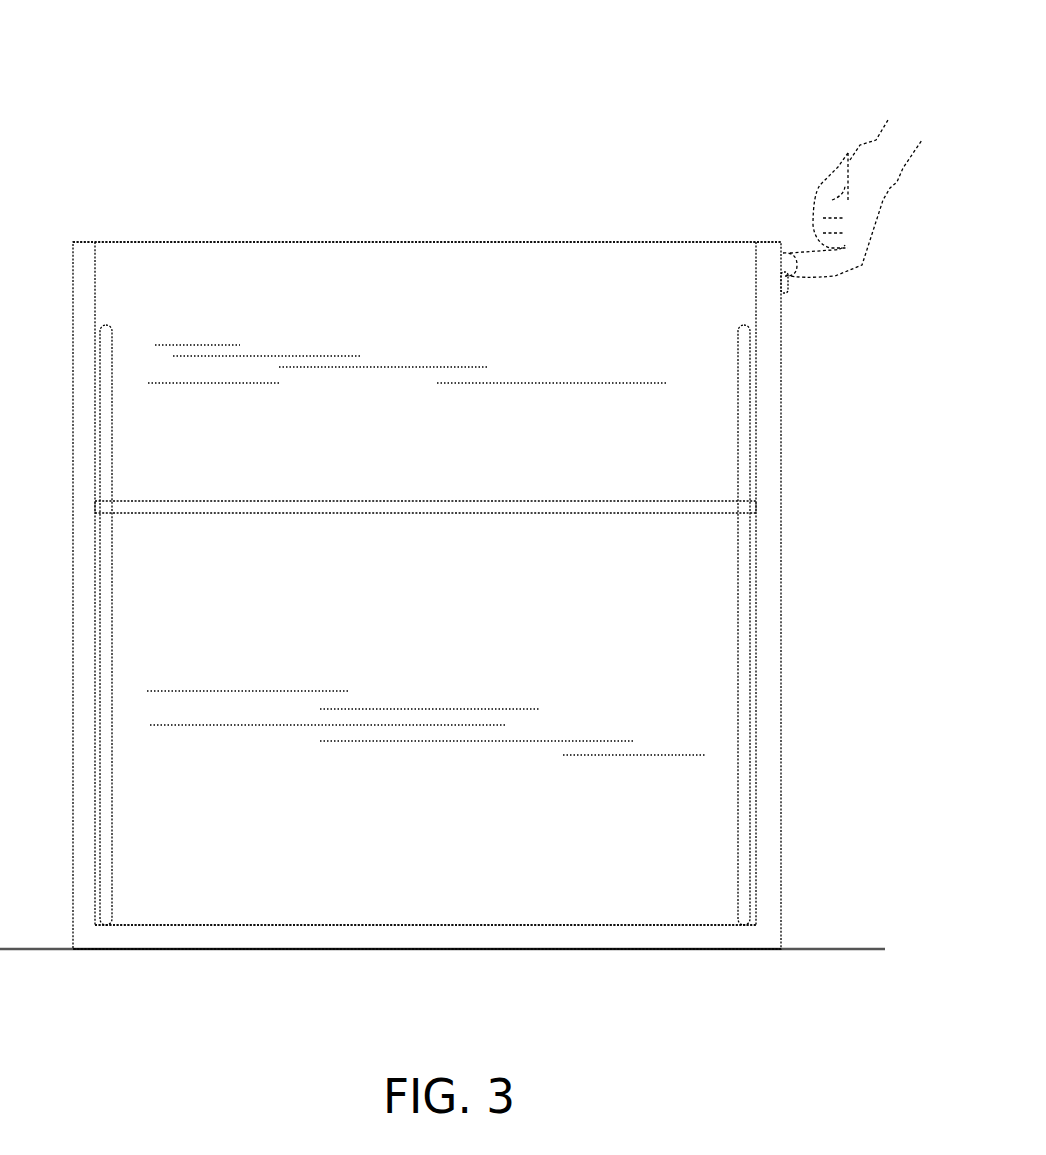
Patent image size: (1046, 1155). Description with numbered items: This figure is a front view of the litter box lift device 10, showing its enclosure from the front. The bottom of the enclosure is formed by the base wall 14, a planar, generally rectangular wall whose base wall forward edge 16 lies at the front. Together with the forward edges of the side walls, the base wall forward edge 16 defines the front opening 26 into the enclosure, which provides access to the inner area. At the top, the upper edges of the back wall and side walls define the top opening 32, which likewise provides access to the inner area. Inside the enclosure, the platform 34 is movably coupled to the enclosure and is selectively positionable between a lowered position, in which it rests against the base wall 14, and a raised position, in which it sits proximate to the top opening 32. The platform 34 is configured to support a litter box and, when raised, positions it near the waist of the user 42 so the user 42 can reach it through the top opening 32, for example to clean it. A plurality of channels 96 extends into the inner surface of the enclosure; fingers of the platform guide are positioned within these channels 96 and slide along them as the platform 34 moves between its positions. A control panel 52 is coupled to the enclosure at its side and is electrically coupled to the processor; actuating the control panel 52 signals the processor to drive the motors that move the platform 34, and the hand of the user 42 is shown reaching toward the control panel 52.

The litter box lift device 10 is at (683, 125).
The base wall 14 is at (330, 925).
The base wall forward edge 16 is at (553, 938).
The front opening 26 is at (165, 920).
The top opening 32 is at (311, 210).
The platform 34 is at (193, 513).
The user 42 is at (883, 200).
The control panel 52 is at (818, 313).
The plurality of channels 96 is at (140, 308).